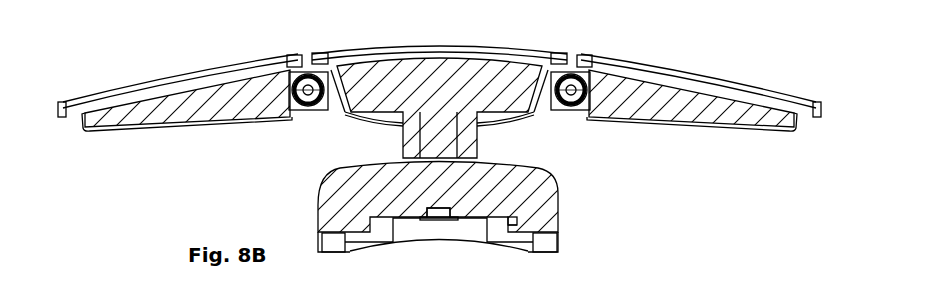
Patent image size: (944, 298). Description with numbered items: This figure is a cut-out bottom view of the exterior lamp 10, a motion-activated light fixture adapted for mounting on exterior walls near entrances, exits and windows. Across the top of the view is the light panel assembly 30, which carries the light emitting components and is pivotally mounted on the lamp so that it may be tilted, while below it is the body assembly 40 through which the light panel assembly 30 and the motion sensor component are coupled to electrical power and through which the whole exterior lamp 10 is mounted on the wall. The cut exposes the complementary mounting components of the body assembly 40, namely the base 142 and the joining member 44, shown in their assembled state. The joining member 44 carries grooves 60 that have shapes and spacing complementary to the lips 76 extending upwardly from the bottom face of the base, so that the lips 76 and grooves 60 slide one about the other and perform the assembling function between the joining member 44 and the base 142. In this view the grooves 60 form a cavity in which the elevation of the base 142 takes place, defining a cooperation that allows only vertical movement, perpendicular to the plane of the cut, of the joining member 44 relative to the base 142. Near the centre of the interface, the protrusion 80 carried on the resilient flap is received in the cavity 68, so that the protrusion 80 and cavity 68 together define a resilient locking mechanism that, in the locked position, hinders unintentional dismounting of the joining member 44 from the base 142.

The exterior lamp 10 is at (727, 37).
The light panel assembly 30 is at (176, 56).
The body assembly 40 is at (304, 182).
The joining member 44 is at (367, 202).
The grooves 60 is at (515, 220).
The lips 76 is at (510, 225).
The base 142 is at (410, 235).
The cavity 68 is at (478, 244).
The protrusion 80 is at (440, 220).